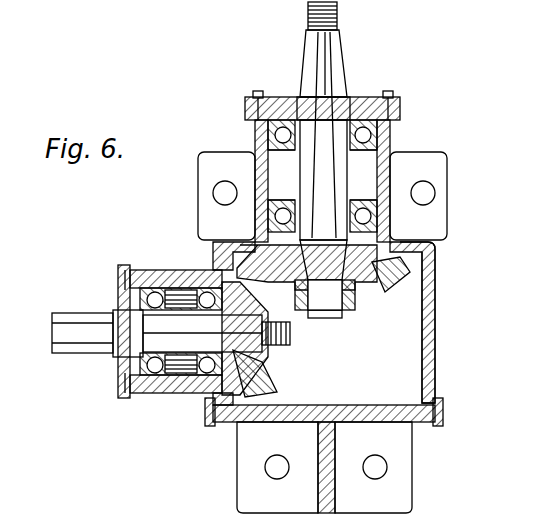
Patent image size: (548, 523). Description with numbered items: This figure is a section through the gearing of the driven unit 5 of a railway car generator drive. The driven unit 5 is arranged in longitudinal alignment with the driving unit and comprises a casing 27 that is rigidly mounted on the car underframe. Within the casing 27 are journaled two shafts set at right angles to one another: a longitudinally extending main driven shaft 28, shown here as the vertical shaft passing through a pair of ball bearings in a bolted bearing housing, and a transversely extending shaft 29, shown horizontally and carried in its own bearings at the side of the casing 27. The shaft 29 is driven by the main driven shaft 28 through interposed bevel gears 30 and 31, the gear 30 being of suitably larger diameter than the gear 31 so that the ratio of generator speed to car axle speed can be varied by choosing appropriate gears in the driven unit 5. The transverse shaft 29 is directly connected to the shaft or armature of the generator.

The driven unit 5 is at (289, 302).
The casing 27 is at (435, 333).
The main driven shaft 28 is at (332, 107).
The transversely extending shaft 29 is at (100, 318).
The bevel gear 30 is at (372, 288).
The bevel gear 31 is at (270, 378).